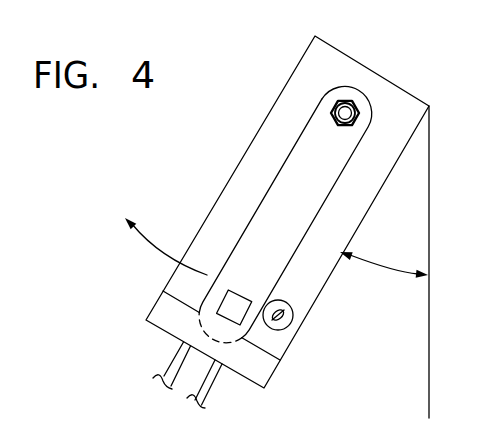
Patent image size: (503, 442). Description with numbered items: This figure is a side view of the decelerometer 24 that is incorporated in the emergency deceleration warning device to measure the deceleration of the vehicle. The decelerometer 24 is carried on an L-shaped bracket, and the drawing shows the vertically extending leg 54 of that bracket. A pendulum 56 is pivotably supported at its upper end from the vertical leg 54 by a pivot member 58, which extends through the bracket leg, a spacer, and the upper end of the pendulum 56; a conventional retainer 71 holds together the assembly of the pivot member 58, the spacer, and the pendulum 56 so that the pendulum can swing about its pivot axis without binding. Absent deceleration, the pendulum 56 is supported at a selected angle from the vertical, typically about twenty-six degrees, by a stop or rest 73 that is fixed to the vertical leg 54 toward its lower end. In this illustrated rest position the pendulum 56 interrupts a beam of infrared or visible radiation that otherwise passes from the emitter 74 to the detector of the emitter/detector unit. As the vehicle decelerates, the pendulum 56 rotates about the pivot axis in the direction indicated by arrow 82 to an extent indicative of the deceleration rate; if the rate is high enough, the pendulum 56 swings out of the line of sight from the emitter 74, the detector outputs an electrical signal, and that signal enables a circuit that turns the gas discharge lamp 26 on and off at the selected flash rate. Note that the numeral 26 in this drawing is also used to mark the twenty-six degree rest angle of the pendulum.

The decelerometer 24 is at (254, 55).
The vertical leg 54 is at (272, 108).
The pendulum 56 is at (262, 180).
The pivot member 58 is at (360, 112).
The retainer 71 is at (360, 121).
The stop 73 is at (292, 327).
The emitter 74 is at (243, 297).
The arrow 82 is at (158, 250).
The gas discharge lamp 26 is at (390, 268).